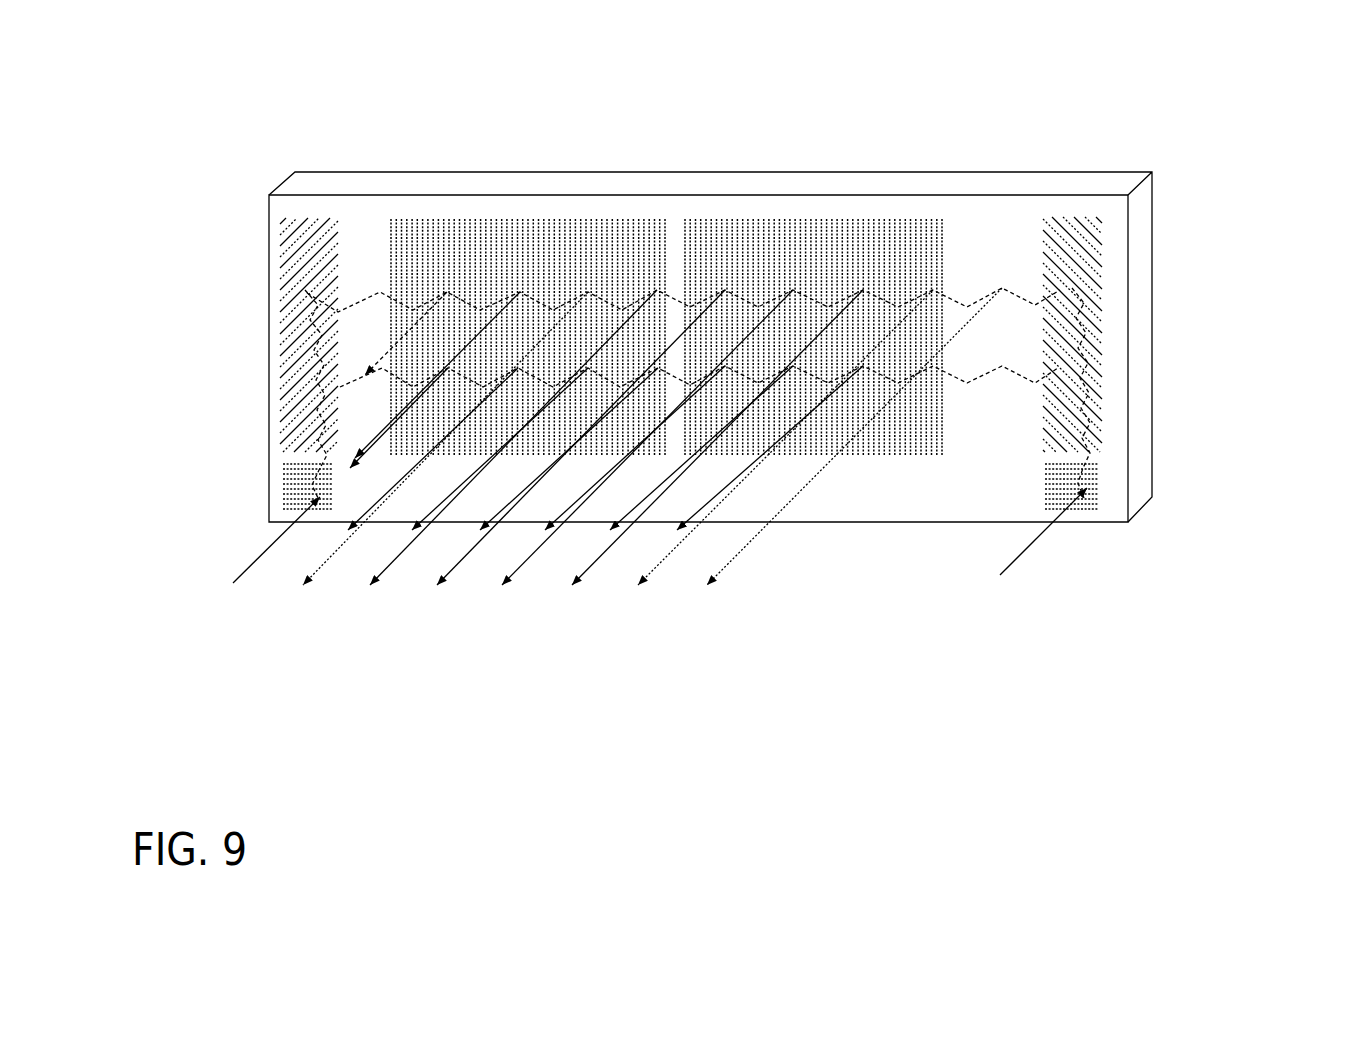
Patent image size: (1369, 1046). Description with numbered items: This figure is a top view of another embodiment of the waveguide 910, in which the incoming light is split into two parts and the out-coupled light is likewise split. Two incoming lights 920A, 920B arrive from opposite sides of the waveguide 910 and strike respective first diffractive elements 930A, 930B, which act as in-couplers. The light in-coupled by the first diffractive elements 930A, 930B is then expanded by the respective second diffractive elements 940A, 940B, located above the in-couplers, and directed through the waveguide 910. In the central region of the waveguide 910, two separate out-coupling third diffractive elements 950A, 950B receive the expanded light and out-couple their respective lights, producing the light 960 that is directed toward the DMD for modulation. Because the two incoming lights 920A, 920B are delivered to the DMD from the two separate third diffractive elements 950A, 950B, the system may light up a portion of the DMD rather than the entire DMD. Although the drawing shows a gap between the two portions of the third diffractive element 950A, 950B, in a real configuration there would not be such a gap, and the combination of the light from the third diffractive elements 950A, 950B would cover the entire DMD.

The waveguide 910 is at (1162, 173).
The incoming light 920A is at (258, 538).
The incoming light 920B is at (1048, 557).
The first diffractive element 930A is at (277, 476).
The first diffractive element 930B is at (1108, 468).
The second diffractive element 940A is at (272, 269).
The second diffractive element 940B is at (1113, 250).
The third diffractive element 950A is at (596, 208).
The third diffractive element 950B is at (866, 208).
The light directed toward DMD 960 is at (754, 578).